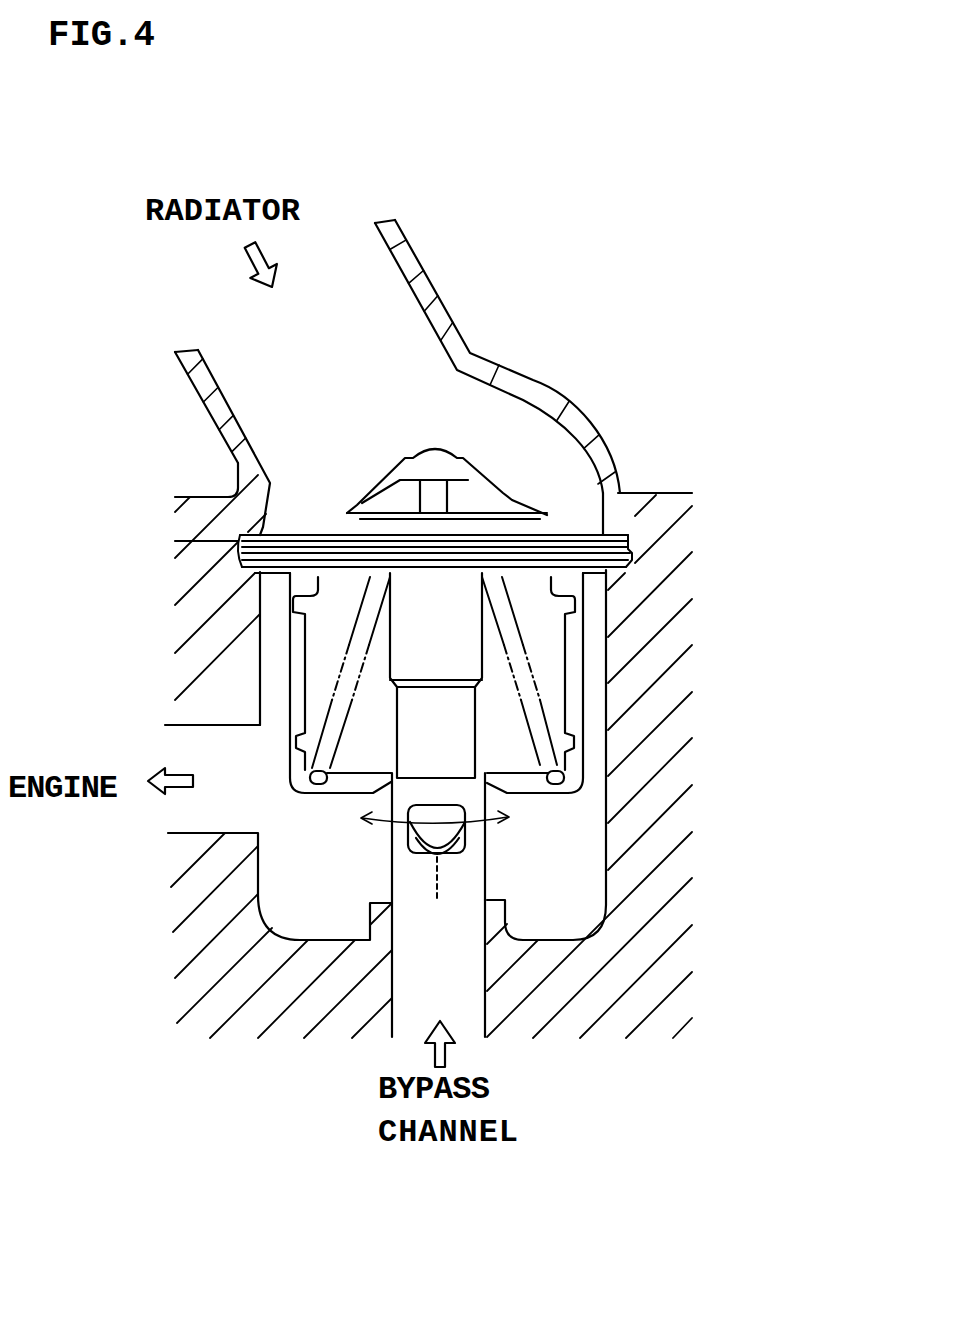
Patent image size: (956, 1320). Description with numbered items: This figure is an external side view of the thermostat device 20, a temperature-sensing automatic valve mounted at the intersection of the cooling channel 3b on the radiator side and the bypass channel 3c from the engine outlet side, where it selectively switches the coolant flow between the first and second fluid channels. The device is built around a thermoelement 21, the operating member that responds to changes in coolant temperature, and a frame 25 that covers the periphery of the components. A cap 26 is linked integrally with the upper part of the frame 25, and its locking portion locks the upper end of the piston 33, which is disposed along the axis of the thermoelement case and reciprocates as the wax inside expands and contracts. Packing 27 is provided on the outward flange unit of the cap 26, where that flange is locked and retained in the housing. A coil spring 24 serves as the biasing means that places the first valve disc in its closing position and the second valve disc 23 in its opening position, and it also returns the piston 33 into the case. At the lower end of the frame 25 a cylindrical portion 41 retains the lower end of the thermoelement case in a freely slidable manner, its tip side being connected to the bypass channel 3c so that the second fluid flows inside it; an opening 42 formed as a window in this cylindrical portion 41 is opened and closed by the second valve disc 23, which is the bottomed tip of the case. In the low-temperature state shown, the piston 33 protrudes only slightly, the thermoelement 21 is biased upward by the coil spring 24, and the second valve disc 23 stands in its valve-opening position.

The cooling channel 3b is at (405, 274).
The bypass channel 3c is at (488, 983).
The thermostat device 20 is at (310, 469).
The thermoelement 21 is at (372, 730).
The second valve disc 23 is at (415, 855).
The coil spring 24 is at (542, 716).
The frame 25 is at (575, 634).
The cap 26 is at (503, 493).
The packing 27 is at (612, 540).
The piston 33 is at (447, 497).
The cylindrical portion 41 is at (473, 864).
The opening 42 is at (445, 840).